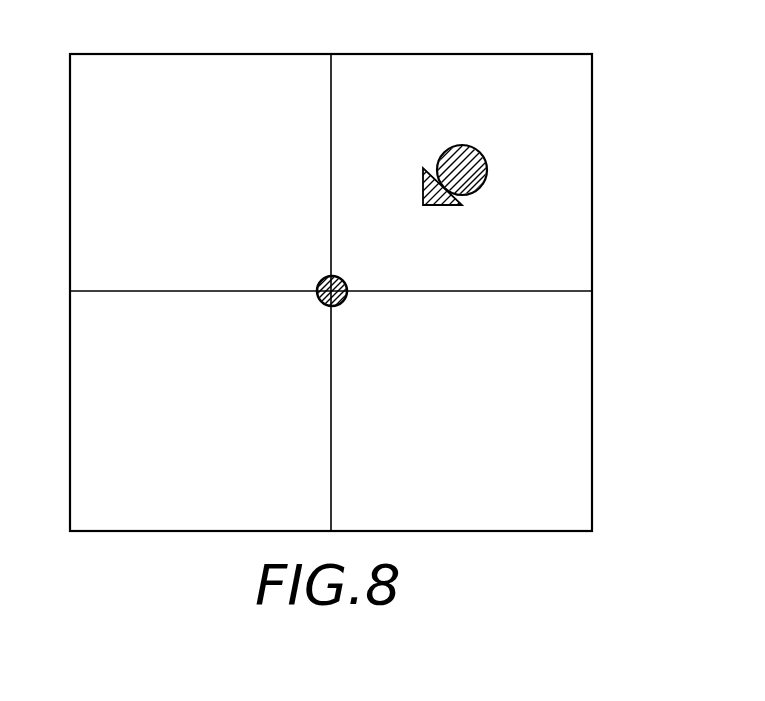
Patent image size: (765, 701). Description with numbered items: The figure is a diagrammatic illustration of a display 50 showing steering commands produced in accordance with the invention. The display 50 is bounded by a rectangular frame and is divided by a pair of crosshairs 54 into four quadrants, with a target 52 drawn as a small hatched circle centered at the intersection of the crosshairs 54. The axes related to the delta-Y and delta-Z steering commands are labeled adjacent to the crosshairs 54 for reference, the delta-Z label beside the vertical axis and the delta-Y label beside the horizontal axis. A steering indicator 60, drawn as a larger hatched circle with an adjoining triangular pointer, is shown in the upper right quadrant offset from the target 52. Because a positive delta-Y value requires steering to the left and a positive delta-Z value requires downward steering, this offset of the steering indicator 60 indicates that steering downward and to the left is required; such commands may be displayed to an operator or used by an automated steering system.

The display 50 is at (415, 54).
The target 52 is at (321, 305).
The crosshairs 54 is at (181, 291).
The steering indicator 60 is at (487, 162).